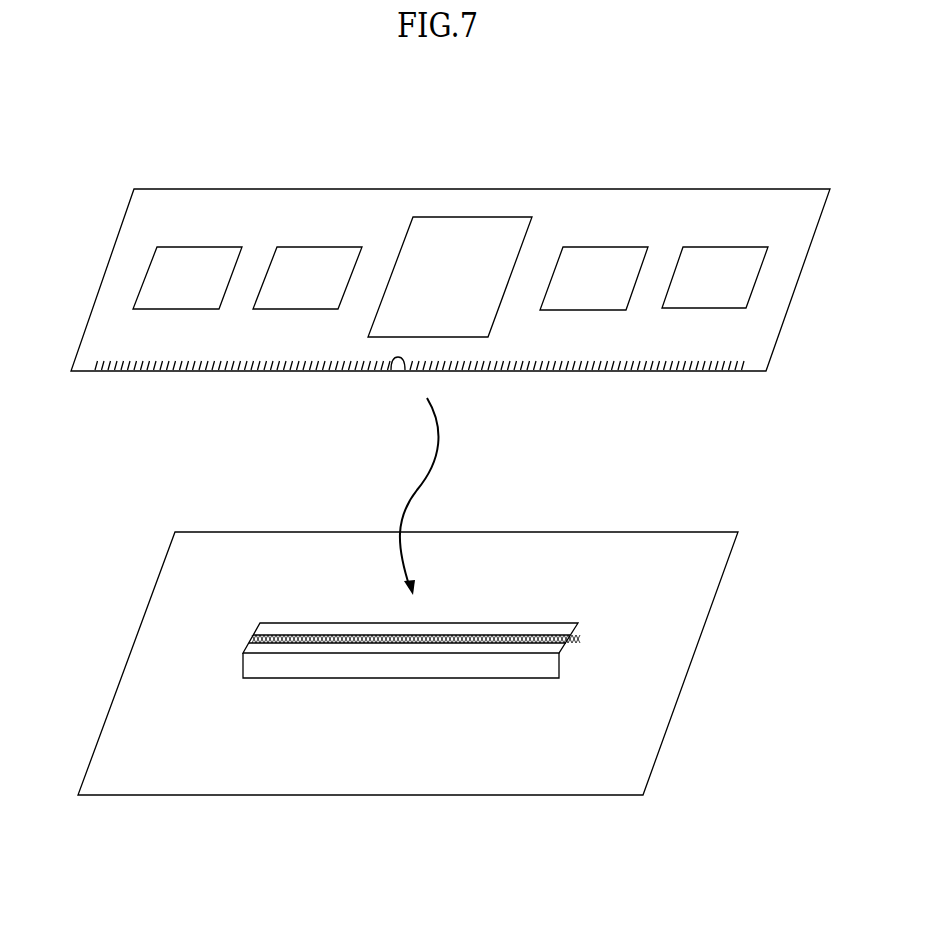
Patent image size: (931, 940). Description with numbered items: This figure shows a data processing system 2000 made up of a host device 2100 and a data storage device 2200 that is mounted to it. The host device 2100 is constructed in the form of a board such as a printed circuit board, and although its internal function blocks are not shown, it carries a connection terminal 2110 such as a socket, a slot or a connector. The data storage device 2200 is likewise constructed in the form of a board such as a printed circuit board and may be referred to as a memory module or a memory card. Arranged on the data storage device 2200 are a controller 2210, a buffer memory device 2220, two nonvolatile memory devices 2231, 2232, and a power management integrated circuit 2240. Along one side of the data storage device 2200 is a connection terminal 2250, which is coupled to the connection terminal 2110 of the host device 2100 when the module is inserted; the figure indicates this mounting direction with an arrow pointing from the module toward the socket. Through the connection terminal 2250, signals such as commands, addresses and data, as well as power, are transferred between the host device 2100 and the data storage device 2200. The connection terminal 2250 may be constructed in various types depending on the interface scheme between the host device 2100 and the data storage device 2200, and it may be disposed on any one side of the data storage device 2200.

The data processing system 2000 is at (110, 150).
The data storage device 2200 is at (450, 305).
The power management integrated circuit (PMIC) 2240 is at (187, 278).
The buffer memory device 2220 is at (307, 278).
The controller 2210 is at (450, 277).
The nonvolatile memory device 2231 is at (594, 278).
The nonvolatile memory device 2232 is at (715, 277).
The connection terminal 2250 is at (118, 372).
The host device 2100 is at (408, 663).
The connection terminal 2110 is at (600, 616).